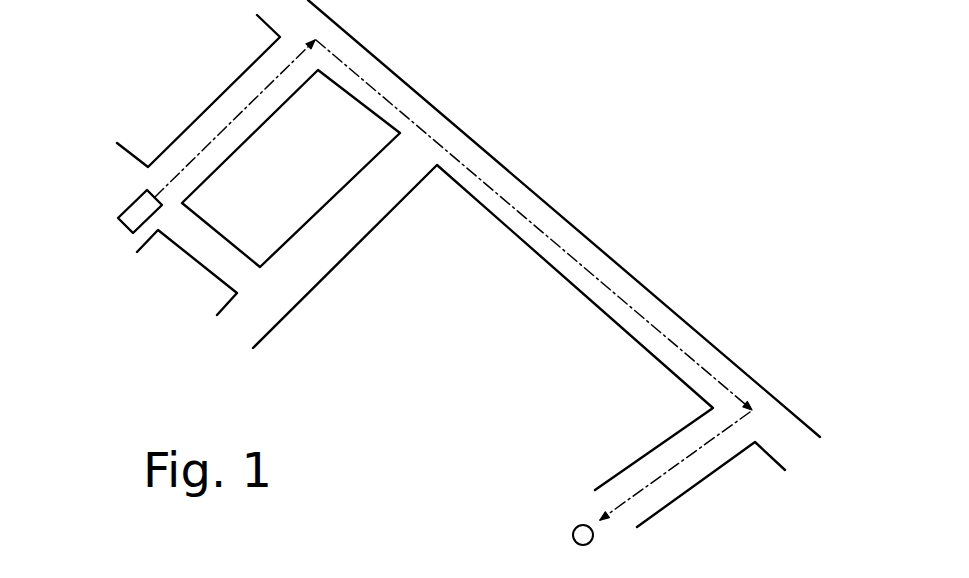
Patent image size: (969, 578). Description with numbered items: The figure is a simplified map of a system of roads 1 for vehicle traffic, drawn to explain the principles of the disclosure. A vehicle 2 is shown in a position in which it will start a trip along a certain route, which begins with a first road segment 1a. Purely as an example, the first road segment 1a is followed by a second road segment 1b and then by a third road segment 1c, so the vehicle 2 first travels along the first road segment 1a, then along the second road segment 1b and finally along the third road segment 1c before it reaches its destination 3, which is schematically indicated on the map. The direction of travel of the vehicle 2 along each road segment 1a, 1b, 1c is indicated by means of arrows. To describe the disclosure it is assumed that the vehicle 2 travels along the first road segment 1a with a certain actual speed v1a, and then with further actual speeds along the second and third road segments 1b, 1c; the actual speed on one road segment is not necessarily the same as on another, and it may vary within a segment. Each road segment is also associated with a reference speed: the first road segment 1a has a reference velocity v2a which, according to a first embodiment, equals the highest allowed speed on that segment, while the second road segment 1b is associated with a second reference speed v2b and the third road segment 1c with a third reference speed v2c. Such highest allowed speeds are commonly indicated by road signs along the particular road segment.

The system of roads 1 is at (503, 90).
The first road segment 1a is at (233, 118).
The second road segment 1b is at (515, 205).
The third road segment 1c is at (678, 460).
The vehicle 2 is at (130, 216).
The destination 3 is at (575, 530).
The actual speed v1a is at (126, 203).
The reference velocity v2a is at (273, 82).
The second reference speed v2b is at (587, 267).
The third reference speed v2c is at (708, 437).